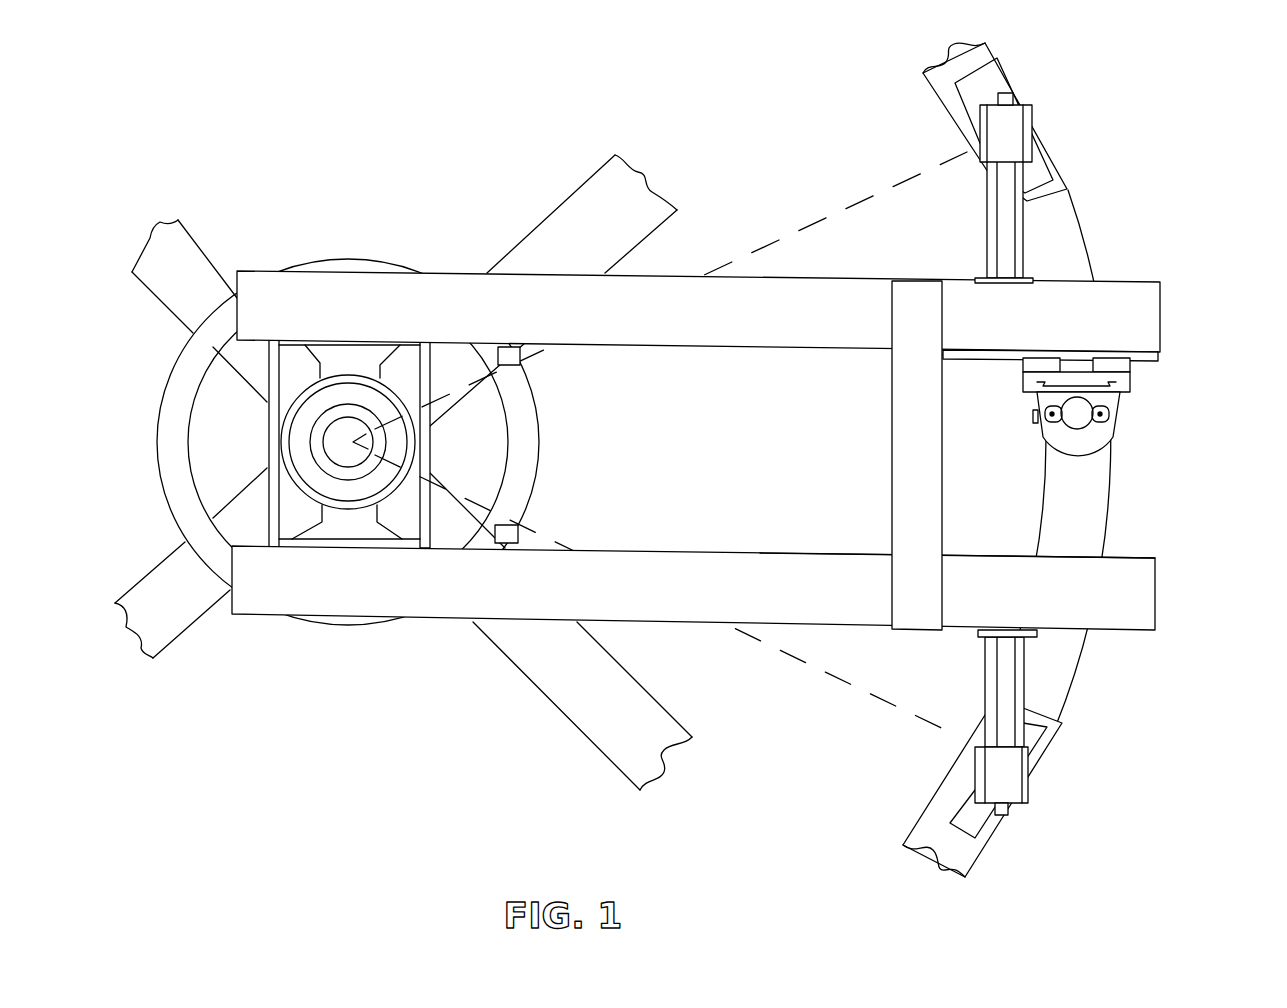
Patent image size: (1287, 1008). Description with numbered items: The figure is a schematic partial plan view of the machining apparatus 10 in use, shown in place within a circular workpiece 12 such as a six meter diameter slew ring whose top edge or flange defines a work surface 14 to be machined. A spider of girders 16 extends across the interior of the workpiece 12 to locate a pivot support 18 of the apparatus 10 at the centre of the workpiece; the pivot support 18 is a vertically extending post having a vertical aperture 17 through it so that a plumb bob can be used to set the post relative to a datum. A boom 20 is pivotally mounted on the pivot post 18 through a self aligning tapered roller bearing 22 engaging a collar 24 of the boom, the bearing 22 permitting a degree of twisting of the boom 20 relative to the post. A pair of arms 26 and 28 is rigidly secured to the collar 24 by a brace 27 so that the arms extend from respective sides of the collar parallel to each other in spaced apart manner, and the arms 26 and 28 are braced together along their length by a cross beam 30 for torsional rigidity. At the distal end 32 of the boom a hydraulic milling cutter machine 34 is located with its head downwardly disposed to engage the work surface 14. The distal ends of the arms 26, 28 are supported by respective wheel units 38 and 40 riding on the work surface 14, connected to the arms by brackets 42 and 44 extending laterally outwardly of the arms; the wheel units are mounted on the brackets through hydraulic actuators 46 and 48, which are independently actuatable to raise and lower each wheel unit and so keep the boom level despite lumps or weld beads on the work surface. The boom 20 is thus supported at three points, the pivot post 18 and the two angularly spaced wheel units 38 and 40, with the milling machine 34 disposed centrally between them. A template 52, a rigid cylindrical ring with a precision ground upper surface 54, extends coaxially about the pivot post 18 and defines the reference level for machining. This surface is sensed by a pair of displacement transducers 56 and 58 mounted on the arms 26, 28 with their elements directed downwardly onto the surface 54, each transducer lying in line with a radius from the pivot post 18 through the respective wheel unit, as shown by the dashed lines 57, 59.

The machining apparatus 10 is at (444, 657).
The circular workpiece 12 is at (1112, 512).
The work surface 14 is at (1097, 472).
The girders 16 is at (217, 254).
The vertical aperture 17 is at (342, 433).
The pivot support 18 is at (313, 443).
The boom 20 is at (753, 552).
The self aligning tapered roller bearing 22 is at (305, 462).
The collar 24 is at (345, 507).
The arm 26 is at (728, 327).
The brace 27 is at (268, 369).
The arm 28 is at (853, 558).
The cross beam 30 is at (890, 442).
The distal end 32 is at (1162, 340).
The hydraulic milling cutter machine 34 is at (1112, 406).
The wheel unit 38 is at (1015, 75).
The wheel unit 40 is at (1053, 753).
The bracket 42 is at (1025, 218).
The bracket 44 is at (1025, 673).
The hydraulic actuator 46 is at (1003, 135).
The hydraulic actuator 48 is at (1017, 783).
The template 52 is at (545, 408).
The upper surface 54 is at (517, 472).
The displacement transducer 56 is at (520, 357).
The dashed line 57 is at (823, 218).
The displacement transducer 58 is at (518, 528).
The dashed line 59 is at (799, 657).